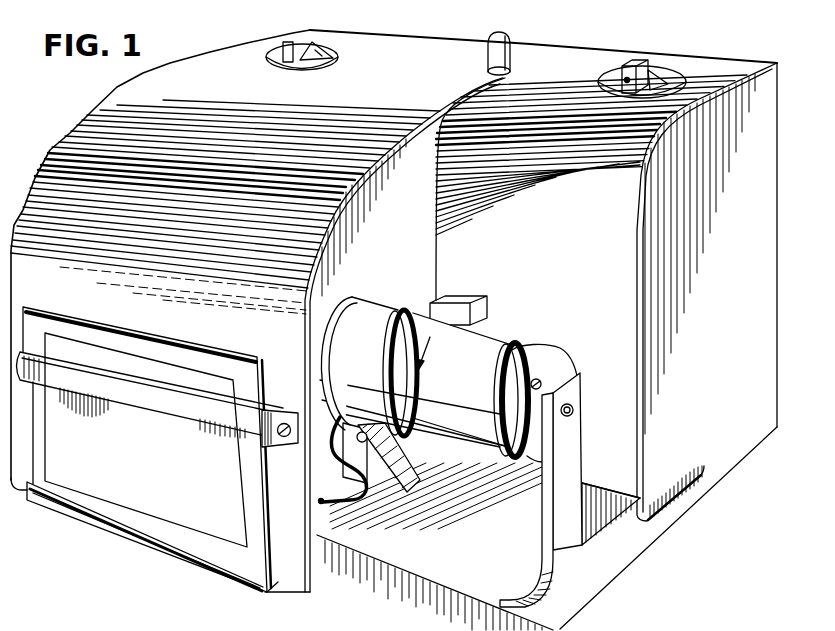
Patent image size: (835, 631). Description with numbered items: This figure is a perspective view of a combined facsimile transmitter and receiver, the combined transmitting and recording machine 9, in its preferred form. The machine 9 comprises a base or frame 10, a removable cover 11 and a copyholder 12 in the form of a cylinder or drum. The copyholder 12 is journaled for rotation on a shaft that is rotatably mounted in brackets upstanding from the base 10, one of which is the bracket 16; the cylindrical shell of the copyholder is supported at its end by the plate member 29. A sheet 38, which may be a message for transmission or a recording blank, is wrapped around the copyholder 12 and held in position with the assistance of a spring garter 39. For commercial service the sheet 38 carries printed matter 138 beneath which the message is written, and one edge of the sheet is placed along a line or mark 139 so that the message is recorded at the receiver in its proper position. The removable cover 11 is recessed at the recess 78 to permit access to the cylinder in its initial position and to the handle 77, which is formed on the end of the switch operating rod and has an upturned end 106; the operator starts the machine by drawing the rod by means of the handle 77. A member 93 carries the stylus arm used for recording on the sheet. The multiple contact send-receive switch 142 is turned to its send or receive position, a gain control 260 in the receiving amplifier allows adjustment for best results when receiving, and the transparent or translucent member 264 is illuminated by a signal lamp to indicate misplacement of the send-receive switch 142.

The combined transmitting and recording machine 9 is at (745, 456).
The base or frame 10 is at (588, 587).
The removable cover 11 is at (398, 45).
The copyholder 12 is at (441, 371).
The bracket 16 is at (570, 490).
The plate member 29 is at (570, 360).
The sheet 38 is at (520, 346).
The spring garter 39 is at (408, 333).
The handle 77 is at (348, 490).
The recess 78 is at (620, 385).
The member 93 is at (380, 470).
The upturned end 106 is at (340, 420).
The printed matter 138 is at (340, 350).
The line or mark 139 is at (523, 443).
The send-receive switch 142 is at (627, 67).
The gain control 260 is at (303, 44).
The transparent or translucent member 264 is at (503, 35).